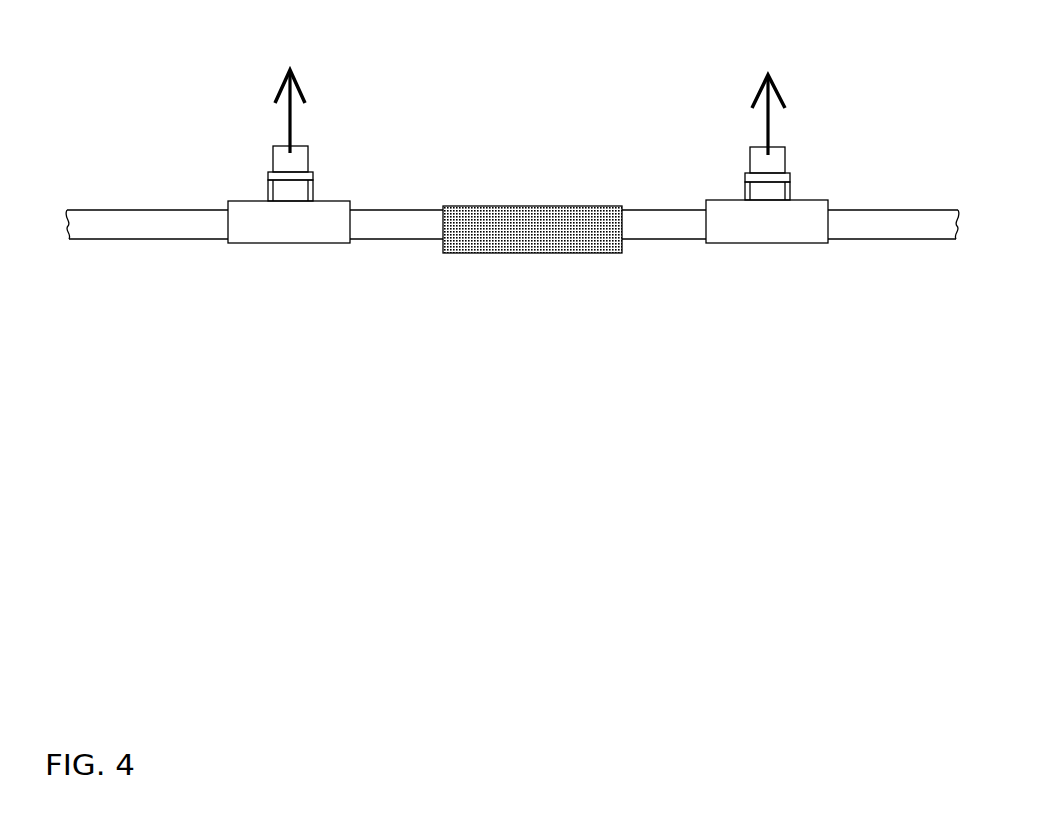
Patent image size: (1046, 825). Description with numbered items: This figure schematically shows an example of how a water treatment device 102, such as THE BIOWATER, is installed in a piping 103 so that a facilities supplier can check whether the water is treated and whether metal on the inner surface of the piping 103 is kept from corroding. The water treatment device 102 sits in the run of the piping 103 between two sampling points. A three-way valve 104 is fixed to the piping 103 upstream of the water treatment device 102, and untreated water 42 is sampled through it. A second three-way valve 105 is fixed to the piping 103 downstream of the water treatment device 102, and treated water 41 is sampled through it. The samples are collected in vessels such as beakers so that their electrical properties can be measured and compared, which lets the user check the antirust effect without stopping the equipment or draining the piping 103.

The treated water 41 is at (289, 91).
The untreated water 42 is at (768, 93).
The water treatment device 102 is at (537, 223).
The piping 103 is at (405, 217).
The three-way valve 104 is at (270, 230).
The three-way valve 105 is at (747, 227).